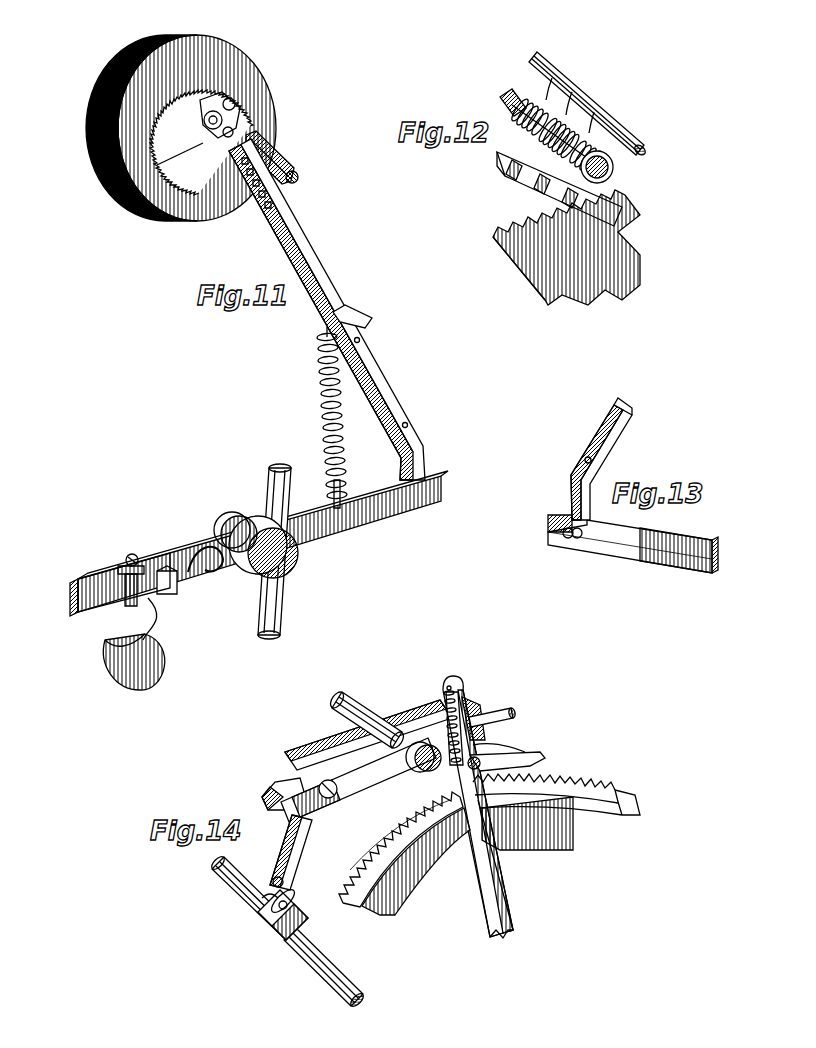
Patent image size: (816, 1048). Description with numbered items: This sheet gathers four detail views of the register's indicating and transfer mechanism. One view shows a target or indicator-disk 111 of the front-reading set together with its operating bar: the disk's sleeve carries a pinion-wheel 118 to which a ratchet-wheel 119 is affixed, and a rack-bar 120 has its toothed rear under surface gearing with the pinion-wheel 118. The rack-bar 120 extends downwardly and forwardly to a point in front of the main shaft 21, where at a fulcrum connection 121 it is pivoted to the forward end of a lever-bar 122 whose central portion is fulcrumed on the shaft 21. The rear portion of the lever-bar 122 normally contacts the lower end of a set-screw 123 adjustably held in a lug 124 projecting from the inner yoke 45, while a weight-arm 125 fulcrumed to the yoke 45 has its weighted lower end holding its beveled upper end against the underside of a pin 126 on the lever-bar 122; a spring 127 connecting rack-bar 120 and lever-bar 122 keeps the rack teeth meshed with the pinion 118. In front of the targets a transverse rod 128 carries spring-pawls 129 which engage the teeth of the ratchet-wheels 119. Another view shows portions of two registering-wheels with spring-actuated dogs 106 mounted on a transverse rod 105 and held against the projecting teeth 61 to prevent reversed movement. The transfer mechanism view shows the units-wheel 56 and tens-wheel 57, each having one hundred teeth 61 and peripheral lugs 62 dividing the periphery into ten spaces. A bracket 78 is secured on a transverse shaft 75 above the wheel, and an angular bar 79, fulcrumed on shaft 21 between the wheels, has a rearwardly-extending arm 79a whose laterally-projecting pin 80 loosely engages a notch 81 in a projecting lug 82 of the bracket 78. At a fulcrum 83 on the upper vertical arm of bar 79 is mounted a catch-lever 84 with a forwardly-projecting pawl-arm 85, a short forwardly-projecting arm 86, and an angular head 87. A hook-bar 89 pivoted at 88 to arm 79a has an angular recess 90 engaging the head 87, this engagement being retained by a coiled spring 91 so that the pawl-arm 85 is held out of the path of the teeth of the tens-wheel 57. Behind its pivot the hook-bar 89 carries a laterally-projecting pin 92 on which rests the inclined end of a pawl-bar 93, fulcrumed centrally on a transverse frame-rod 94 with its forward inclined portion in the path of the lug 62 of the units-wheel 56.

In FIG. 11, the indicator-disk 111 is at (108, 190).
In FIG. 11, the pinion-wheel 118 is at (222, 116).
In FIG. 11, the ratchet-wheel 119 is at (187, 190).
In FIG. 11, the rack-bar 120 is at (310, 247).
In FIG. 13, the rack-bar 120 is at (628, 425).
In FIG. 13, the fulcrum connection 121 is at (566, 513).
In FIG. 11, the lever-bar 122 is at (397, 497).
In FIG. 13, the lever-bar 122 is at (690, 540).
In FIG. 11, the set-screw 123 is at (78, 590).
In FIG. 11, the lug 124 is at (137, 561).
In FIG. 11, the weight-arm 125 is at (170, 630).
In FIG. 11, the pin 126 is at (190, 548).
In FIG. 11, the spring 127 is at (320, 400).
In FIG. 11, the transverse rod 128 is at (297, 180).
In FIG. 11, the spring-pawl 129 is at (262, 144).
In FIG. 11, the main shaft 21 is at (283, 570).
In FIG. 11, the inner yoke 45 is at (205, 540).
In FIG. 12, the transverse rod 105 is at (617, 168).
In FIG. 12, the spring-actuated dog 106 is at (557, 195).
In FIG. 12, the projecting teeth 61 is at (530, 200).
In FIG. 14, the projecting teeth 61 is at (587, 783).
In FIG. 14, the tens registering-wheel 57 is at (617, 797).
In FIG. 14, the peripheral lug 62 is at (515, 792).
In FIG. 14, the units registering-wheel 56 is at (416, 877).
In FIG. 14, the transverse shaft 75 is at (313, 953).
In FIG. 14, the bracket 78 is at (270, 927).
In FIG. 14, the angular bar 79 is at (502, 910).
In FIG. 14, the rearwardly-extending arm 79a is at (350, 800).
In FIG. 14, the laterally-projecting pin 80 is at (275, 877).
In FIG. 14, the notch 81 is at (257, 898).
In FIG. 14, the projecting lug 82 is at (268, 900).
In FIG. 14, the fulcrum 83 is at (487, 751).
In FIG. 14, the catch-lever 84 is at (473, 743).
In FIG. 14, the pawl-arm 85 is at (478, 767).
In FIG. 14, the short forwardly-projecting arm 86 is at (500, 713).
In FIG. 14, the angular head 87 is at (476, 715).
In FIG. 14, the pivot 88 is at (328, 800).
In FIG. 14, the hook-bar 89 is at (393, 770).
In FIG. 14, the angular recess 90 is at (470, 717).
In FIG. 14, the coiled spring 91 is at (448, 687).
In FIG. 14, the laterally-projecting pin 92 is at (280, 800).
In FIG. 14, the pawl-bar 93 is at (340, 748).
In FIG. 14, the transverse frame-rod 94 is at (368, 715).